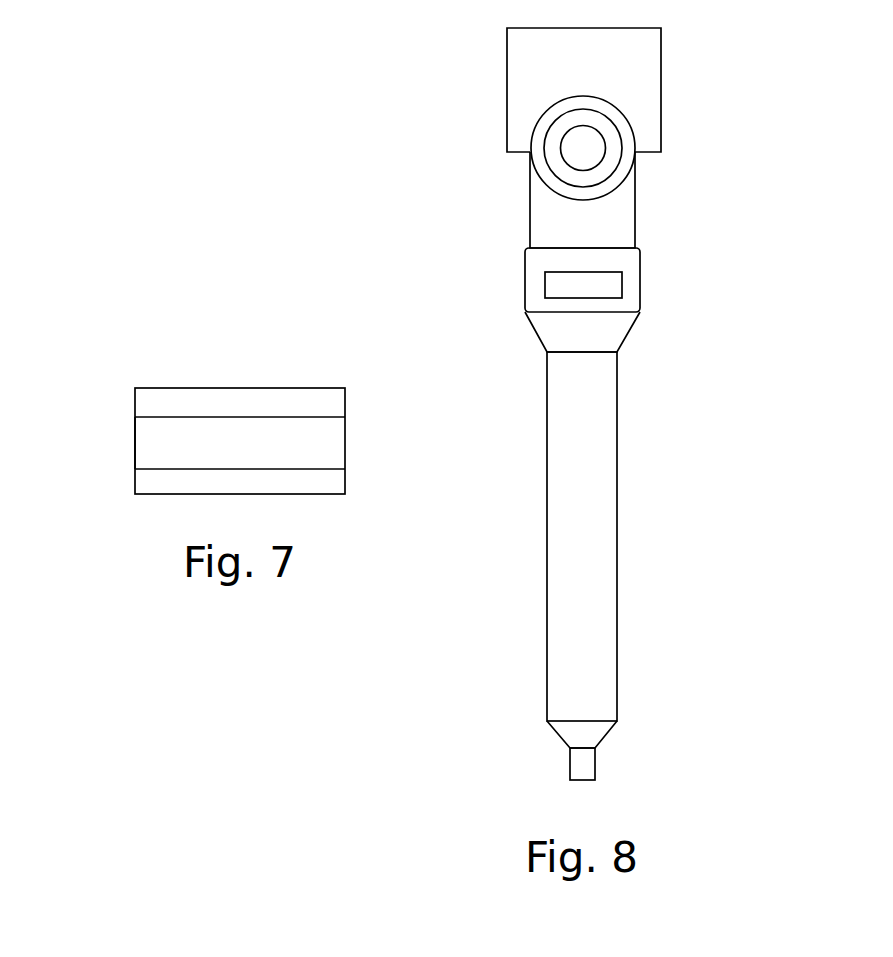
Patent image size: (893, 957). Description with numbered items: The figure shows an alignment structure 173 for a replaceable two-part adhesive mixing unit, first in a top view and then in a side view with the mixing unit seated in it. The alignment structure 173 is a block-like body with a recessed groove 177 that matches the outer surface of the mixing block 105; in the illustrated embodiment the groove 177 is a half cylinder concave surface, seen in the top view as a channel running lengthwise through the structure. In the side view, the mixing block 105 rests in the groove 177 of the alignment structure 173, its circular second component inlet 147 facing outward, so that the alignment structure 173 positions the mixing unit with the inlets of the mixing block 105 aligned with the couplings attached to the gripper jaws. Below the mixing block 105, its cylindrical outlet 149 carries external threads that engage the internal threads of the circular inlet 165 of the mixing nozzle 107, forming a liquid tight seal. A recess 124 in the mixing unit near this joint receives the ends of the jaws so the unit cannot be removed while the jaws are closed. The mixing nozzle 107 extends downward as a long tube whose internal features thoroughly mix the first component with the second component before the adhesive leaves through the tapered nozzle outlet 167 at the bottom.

In FIG. 8, the mixing block 105 is at (537, 212).
In FIG. 8, the mixing nozzle 107 is at (617, 523).
In FIG. 8, the recess 124 is at (550, 287).
In FIG. 8, the second component inlet 147 is at (570, 120).
In FIG. 8, the outlet 149 is at (530, 245).
In FIG. 8, the inlet 165 is at (640, 307).
In FIG. 8, the nozzle outlet 167 is at (597, 765).
In FIG. 7, the alignment structure 173 is at (245, 405).
In FIG. 8, the alignment structure 173 is at (640, 113).
In FIG. 7, the groove 177 is at (160, 440).
In FIG. 8, the groove 177 is at (613, 107).